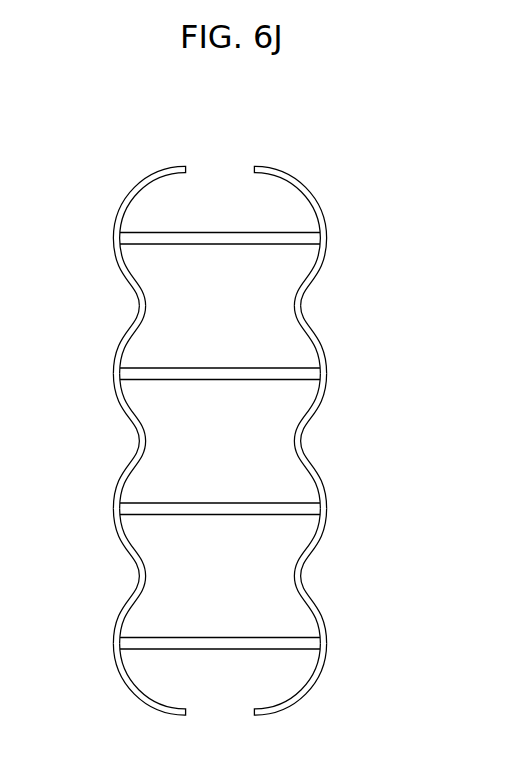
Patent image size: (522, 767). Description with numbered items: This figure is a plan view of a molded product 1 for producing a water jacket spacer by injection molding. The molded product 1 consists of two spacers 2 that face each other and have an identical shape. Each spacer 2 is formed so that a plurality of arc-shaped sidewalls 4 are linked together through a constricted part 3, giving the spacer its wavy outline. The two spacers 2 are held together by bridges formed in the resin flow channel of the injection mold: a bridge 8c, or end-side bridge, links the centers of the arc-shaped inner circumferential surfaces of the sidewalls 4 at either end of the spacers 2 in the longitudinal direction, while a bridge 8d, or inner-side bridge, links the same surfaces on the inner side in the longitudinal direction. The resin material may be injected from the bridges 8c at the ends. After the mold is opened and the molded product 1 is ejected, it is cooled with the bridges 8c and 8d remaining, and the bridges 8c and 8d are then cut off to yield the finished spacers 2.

The molded product 1 is at (221, 411).
The spacer 2 is at (113, 236).
The constricted part 3 is at (138, 302).
The arc-shaped sidewall 4 is at (118, 536).
The end-side bridge 8c is at (250, 245).
The inner-side bridge 8d is at (247, 368).